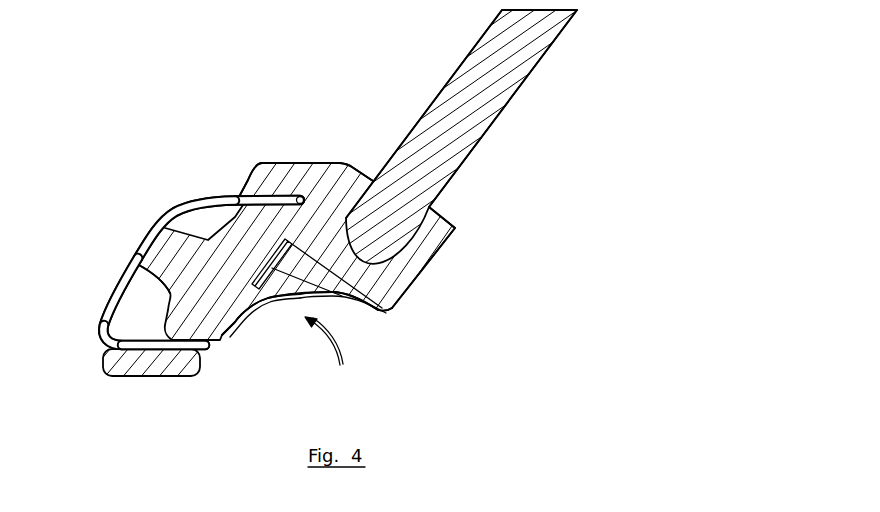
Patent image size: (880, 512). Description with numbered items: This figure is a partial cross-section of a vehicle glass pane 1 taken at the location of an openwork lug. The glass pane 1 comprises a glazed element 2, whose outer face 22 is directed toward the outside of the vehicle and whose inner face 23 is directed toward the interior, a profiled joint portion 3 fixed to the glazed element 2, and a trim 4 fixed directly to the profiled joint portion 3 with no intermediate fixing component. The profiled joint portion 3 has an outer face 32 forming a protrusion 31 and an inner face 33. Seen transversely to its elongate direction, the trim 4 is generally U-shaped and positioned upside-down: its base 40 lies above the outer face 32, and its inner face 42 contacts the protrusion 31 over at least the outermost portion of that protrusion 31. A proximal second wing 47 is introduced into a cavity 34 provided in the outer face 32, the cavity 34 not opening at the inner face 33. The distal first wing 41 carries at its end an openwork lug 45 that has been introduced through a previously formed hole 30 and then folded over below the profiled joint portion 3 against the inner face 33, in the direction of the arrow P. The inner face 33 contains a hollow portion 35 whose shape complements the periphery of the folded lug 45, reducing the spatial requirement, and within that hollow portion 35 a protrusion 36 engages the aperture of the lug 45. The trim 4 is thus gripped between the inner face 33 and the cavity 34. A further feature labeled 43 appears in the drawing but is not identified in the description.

The glass pane 1 is at (268, 51).
The glazed element 2 is at (497, 71).
The profiled joint portion 3 is at (333, 204).
The trim 4 is at (127, 280).
The outer face 22 is at (431, 104).
The inner face 23 is at (542, 57).
The hole 30 is at (205, 350).
The protrusion 31 is at (148, 266).
The outer face 32 is at (251, 172).
The inner face 33 is at (389, 305).
The cavity 34 is at (295, 195).
The hollow portion 35 is at (345, 293).
The protrusion 36 is at (235, 328).
The base 40 is at (136, 248).
The first wing 41 is at (108, 302).
The inner face 42 is at (166, 216).
The free end of spring wire 43 is at (194, 346).
The openwork lug 45 is at (280, 268).
The second wing 47 is at (224, 196).
The arrow P is at (343, 357).